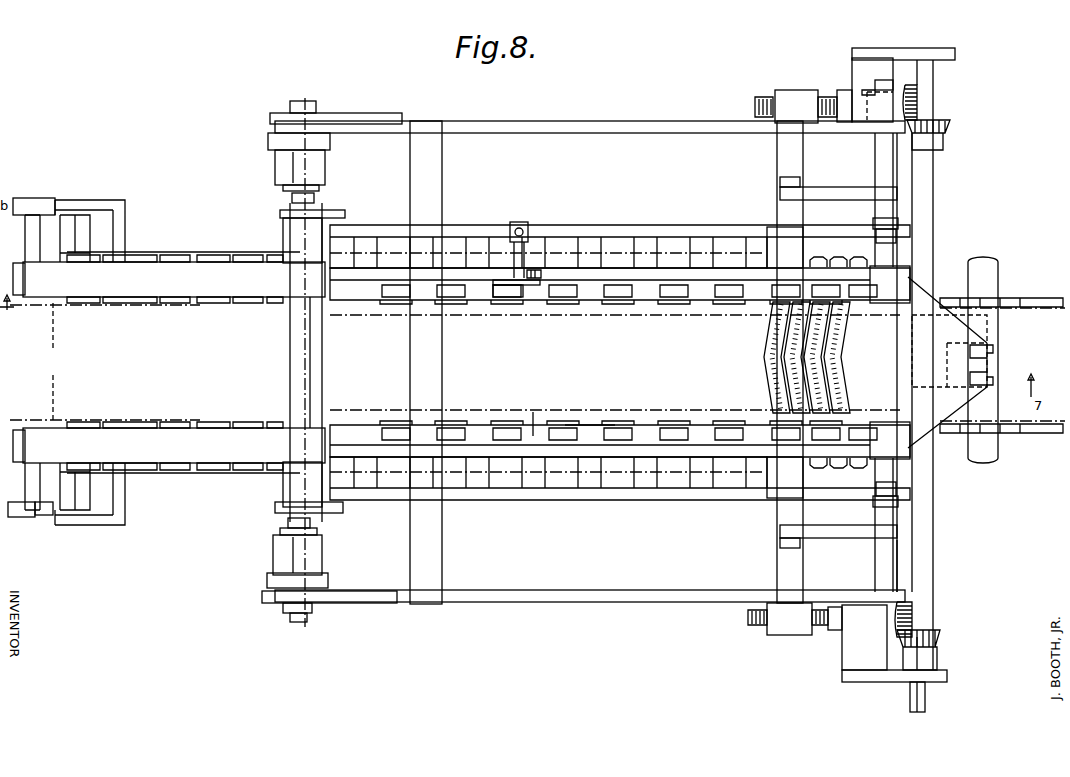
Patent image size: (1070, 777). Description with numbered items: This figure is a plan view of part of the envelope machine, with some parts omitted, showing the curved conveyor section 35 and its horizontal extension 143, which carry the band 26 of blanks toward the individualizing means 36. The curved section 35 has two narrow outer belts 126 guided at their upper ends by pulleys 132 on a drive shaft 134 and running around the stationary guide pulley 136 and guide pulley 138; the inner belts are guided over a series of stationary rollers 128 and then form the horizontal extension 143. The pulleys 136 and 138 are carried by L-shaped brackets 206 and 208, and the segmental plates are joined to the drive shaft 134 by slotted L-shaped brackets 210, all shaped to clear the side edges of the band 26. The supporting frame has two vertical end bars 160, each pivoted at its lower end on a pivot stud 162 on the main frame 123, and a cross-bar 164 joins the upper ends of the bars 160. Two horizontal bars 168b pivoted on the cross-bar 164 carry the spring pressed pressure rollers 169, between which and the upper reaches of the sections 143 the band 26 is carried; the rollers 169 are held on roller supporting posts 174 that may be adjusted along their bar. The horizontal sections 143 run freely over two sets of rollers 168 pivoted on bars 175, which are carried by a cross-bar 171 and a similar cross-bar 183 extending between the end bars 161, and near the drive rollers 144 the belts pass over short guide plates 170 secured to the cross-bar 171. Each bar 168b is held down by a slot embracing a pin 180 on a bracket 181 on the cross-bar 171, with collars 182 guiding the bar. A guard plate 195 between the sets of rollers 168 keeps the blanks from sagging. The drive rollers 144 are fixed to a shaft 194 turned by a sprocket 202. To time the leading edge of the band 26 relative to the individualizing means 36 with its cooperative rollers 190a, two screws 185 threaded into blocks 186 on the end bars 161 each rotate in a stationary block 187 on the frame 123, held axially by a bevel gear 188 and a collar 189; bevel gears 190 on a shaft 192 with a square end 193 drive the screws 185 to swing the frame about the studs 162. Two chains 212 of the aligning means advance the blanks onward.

The band of blanks 26 is at (137, 252).
The curved conveyor section 35 is at (589, 421).
The individualizing means 36 is at (1005, 348).
The main frame 123 is at (378, 113).
The outer belts 126 is at (168, 288).
The stationary rollers 128 is at (128, 302).
The pulleys 132 is at (282, 300).
The drive shaft 134 is at (291, 232).
The stationary guide pulley 136 is at (46, 305).
The guide pulley 138 is at (24, 300).
The horizontal extension 143 is at (648, 302).
The drive rollers 144 is at (905, 268).
The vertical end bars 160 is at (270, 141).
The end bars 161 is at (650, 128).
The pivot stud 162 is at (305, 101).
The cross-bar 164 is at (322, 163).
The rollers 168 is at (607, 301).
The horizontal bars 168b is at (623, 232).
The pressure rollers 169 is at (563, 293).
The guide plates 170 is at (780, 305).
The cross-bar 171 is at (778, 563).
The roller supporting post 174 is at (518, 222).
The bar 175 is at (756, 232).
The pin 180 is at (890, 208).
The bracket 181 is at (839, 188).
The collars 182 is at (896, 242).
The cross-bar 183 is at (430, 373).
The screws 185 is at (756, 107).
The blocks 186 is at (801, 97).
The stationary block 187 is at (882, 66).
The bevel gear 188 is at (917, 104).
The collar 189 is at (845, 97).
The bevel gears 190 is at (951, 126).
The cooperative rollers 190a is at (990, 376).
The shaft 192 is at (922, 560).
The square end 193 is at (926, 712).
The shaft 194 is at (898, 410).
The guard plate 195 is at (535, 435).
The sprocket 202 is at (867, 90).
The brackets 206 is at (75, 207).
The brackets 208 is at (27, 198).
The brackets 210 is at (279, 241).
The chains 212 is at (1046, 299).